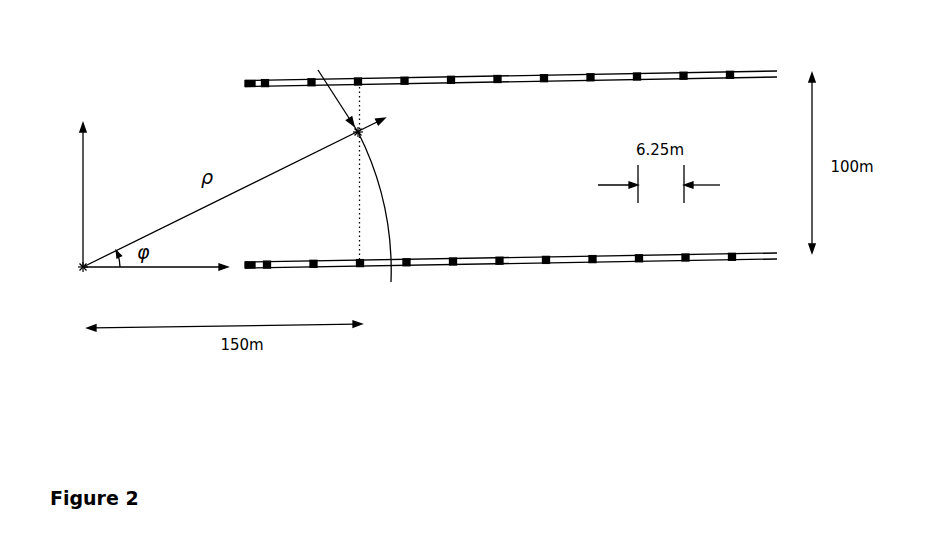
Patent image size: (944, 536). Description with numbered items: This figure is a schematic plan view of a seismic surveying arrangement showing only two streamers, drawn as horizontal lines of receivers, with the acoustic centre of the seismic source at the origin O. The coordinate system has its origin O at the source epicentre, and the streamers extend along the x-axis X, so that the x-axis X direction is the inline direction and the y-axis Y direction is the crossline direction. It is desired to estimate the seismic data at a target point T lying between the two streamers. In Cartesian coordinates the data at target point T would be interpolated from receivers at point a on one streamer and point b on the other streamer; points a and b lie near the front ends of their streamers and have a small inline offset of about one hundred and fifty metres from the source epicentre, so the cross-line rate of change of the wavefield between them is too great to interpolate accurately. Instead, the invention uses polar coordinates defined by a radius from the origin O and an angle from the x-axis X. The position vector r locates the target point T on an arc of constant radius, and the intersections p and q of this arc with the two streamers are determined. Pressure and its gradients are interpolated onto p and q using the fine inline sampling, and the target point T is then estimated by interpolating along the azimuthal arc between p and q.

The receiver point on one streamer a is at (511, 273).
The receiver point on other streamer b is at (511, 67).
The intersection of arc with streamer p is at (382, 213).
The intersection of arc with other streamer q is at (337, 90).
The position of target point r is at (353, 145).
The target point T is at (324, 126).
The origin O is at (75, 276).
The x-axis X is at (155, 281).
The y-axis Y is at (73, 195).